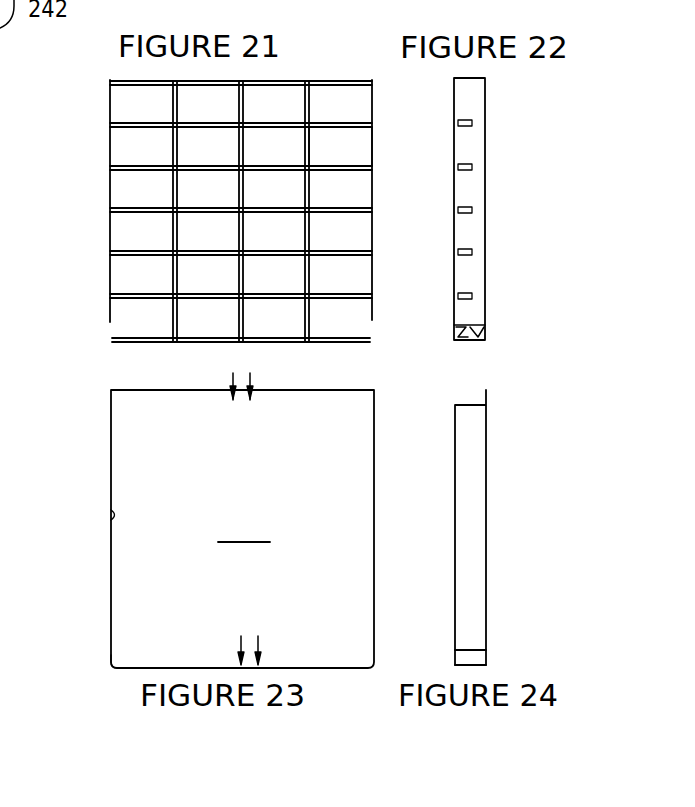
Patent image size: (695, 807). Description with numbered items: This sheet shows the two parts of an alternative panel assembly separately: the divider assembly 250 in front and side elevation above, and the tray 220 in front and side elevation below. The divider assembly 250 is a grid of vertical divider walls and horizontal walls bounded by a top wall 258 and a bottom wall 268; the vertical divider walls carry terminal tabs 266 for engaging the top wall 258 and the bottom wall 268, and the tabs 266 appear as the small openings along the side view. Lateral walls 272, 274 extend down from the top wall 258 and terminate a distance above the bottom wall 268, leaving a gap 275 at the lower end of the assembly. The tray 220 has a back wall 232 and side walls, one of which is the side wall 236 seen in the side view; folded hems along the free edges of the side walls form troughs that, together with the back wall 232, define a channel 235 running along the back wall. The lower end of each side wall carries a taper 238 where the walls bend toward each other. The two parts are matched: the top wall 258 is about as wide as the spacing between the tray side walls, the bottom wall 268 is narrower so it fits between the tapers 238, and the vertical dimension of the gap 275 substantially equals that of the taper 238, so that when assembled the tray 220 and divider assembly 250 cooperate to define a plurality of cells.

In FIG. 23, the tray 220 is at (106, 440).
In FIG. 23, the back wall 232 is at (244, 530).
In FIG. 23, the channel 235 is at (111, 515).
In FIG. 24, the side wall 236 is at (483, 538).
In FIG. 23, the taper 238 is at (110, 661).
In FIG. 24, the taper 238 is at (483, 658).
In FIG. 21, the divider assembly 250 is at (217, 204).
In FIG. 21, the top wall 258 is at (343, 81).
In FIG. 22, the terminal tab 266 is at (478, 82).
In FIG. 21, the bottom wall 268 is at (130, 343).
In FIG. 21, the lateral wall 272 is at (120, 194).
In FIG. 21, the lateral wall 274 is at (360, 153).
In FIG. 22, the lateral wall 274 is at (478, 136).
In FIG. 21, the gap 275 is at (125, 278).
In FIG. 22, the gap 275 is at (482, 333).